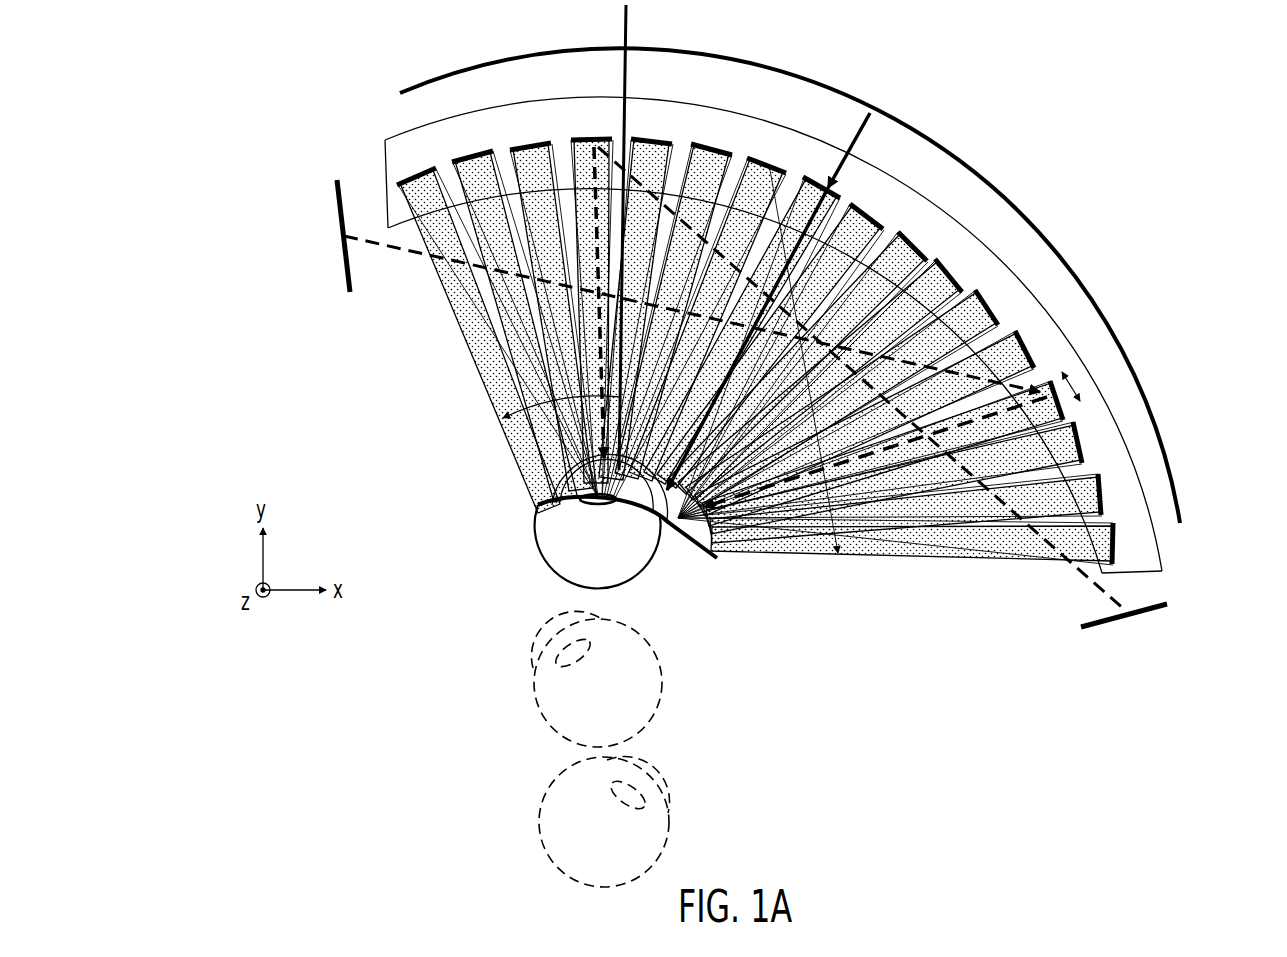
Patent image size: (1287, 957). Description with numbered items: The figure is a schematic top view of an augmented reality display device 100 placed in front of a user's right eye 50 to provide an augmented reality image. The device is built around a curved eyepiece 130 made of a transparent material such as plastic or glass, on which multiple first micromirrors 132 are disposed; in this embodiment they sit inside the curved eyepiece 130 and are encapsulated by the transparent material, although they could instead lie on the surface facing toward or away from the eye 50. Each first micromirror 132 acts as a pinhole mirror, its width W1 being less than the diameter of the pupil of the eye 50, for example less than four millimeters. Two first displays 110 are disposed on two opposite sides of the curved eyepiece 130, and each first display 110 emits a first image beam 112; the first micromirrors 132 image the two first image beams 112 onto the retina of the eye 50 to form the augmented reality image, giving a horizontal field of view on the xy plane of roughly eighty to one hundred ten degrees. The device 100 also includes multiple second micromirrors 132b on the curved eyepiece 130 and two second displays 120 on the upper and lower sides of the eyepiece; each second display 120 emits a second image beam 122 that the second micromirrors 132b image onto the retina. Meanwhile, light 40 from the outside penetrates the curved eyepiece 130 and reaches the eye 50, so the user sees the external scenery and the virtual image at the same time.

The augmented reality display device 100 is at (1258, 858).
The light 40 is at (628, 27).
The eye 50 is at (536, 540).
The first display 110 is at (337, 208).
The first image beam 112 is at (405, 255).
The second display 120 is at (992, 185).
The second image beam 122 is at (862, 146).
The curved eyepiece 130 is at (1163, 571).
The first micromirror 132 is at (1085, 441).
The second micromirror 132b is at (713, 148).
The width of each first micromirror W1 is at (1082, 385).